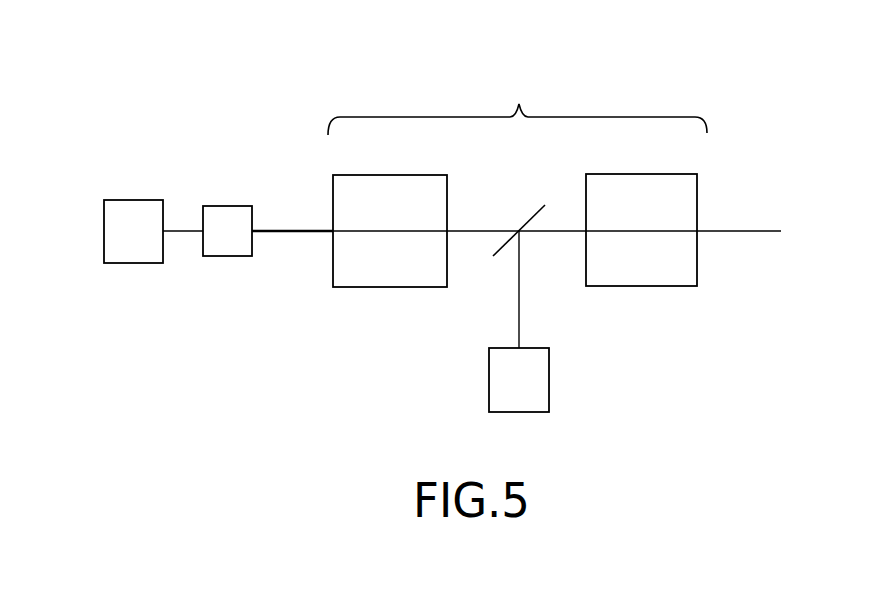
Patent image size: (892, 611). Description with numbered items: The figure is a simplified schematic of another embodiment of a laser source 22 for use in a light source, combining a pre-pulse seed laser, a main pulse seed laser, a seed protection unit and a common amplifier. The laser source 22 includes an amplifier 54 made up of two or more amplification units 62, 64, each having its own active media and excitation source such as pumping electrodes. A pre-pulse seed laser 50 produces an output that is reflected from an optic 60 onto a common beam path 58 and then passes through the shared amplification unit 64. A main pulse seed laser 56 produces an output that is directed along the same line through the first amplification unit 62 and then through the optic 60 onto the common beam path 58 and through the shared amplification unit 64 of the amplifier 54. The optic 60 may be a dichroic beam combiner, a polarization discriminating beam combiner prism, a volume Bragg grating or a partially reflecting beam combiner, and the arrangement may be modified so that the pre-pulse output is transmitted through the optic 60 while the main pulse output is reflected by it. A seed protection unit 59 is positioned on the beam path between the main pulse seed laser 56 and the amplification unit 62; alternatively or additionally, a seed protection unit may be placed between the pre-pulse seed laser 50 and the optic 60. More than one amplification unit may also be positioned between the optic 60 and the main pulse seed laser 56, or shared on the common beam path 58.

The laser source 22 is at (282, 120).
The main pulse seed laser 56 is at (153, 243).
The seed protection unit 59 is at (226, 256).
The amplification unit 62 is at (390, 288).
The amplifier 54 is at (517, 103).
The optic 60 is at (521, 229).
The common beam path 58 is at (545, 230).
The pre-pulse seed laser 50 is at (537, 392).
The amplification unit 64 is at (641, 286).